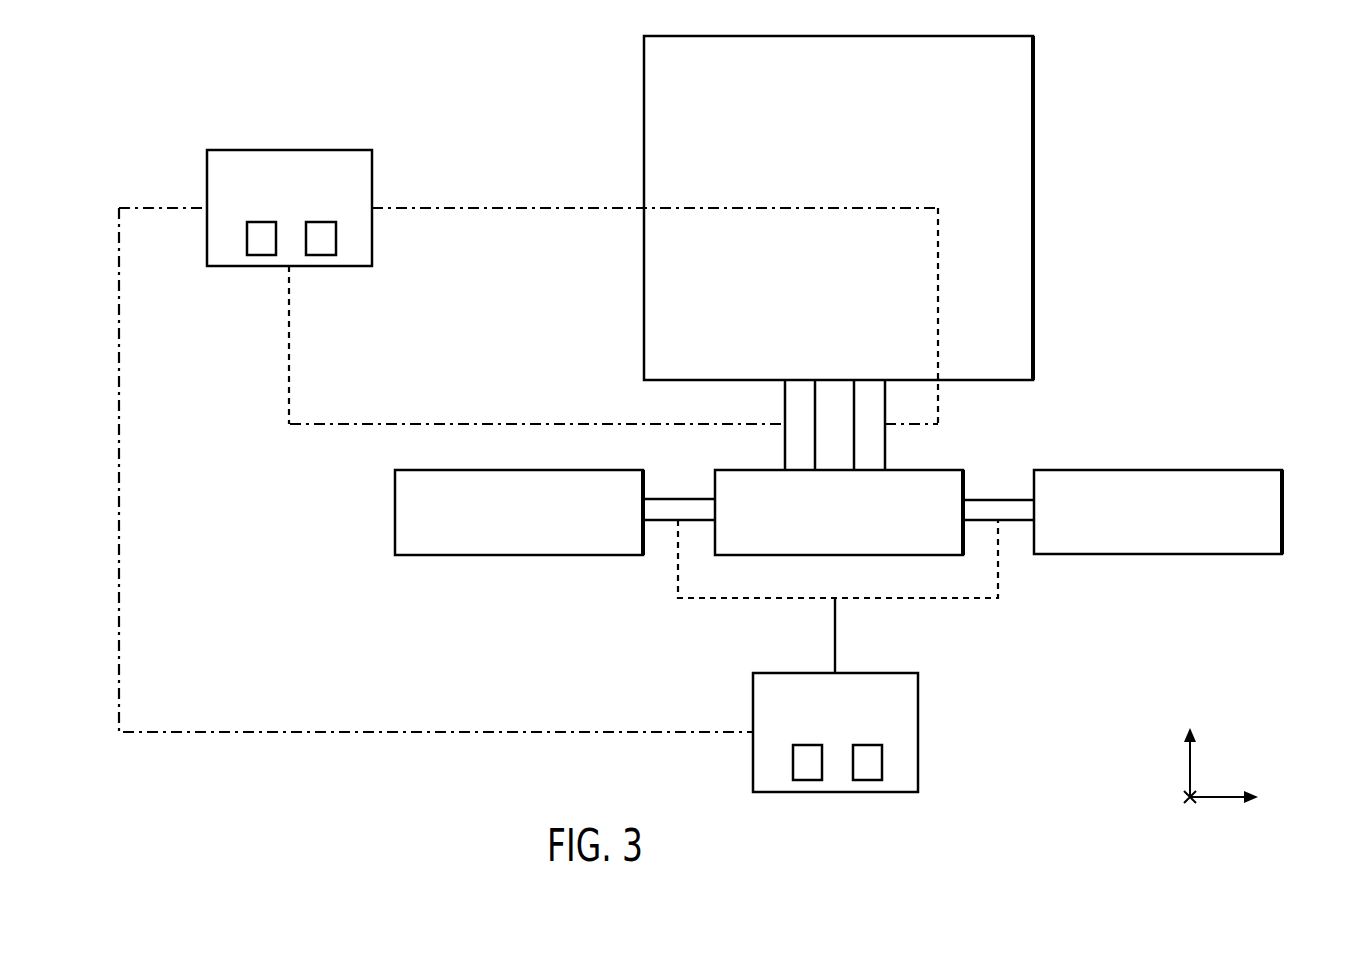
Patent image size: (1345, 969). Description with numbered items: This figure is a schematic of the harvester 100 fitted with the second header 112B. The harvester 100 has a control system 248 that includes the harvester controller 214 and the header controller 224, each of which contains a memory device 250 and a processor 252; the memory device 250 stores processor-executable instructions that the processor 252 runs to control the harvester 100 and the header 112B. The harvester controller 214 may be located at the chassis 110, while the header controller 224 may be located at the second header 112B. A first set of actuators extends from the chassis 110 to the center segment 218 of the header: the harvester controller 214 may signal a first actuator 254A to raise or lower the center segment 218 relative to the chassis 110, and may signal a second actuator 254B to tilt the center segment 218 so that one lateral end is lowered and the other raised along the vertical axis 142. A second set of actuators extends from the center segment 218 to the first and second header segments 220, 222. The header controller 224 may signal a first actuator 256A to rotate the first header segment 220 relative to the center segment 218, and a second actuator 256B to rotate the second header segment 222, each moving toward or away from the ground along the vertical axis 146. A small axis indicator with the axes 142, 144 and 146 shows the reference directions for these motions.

The harvester 100 is at (1149, 79).
The chassis 110 is at (1033, 210).
The second header 112B is at (1290, 456).
The vertical axis 142 is at (1188, 768).
The lateral axis 144 is at (1218, 800).
The vertical axis 146 is at (1185, 797).
The harvester controller 214 is at (290, 150).
The center segment 218 is at (928, 470).
The first header segment 220 is at (1157, 470).
The second header segment 222 is at (458, 470).
The header controller 224 is at (795, 673).
The control system 248 is at (98, 236).
The memory device 250 is at (261, 255).
The processor 252 is at (322, 255).
The first actuator 254A is at (785, 403).
The second actuator 254B is at (854, 403).
The first actuator 256A is at (1015, 522).
The second actuator 256B is at (660, 522).